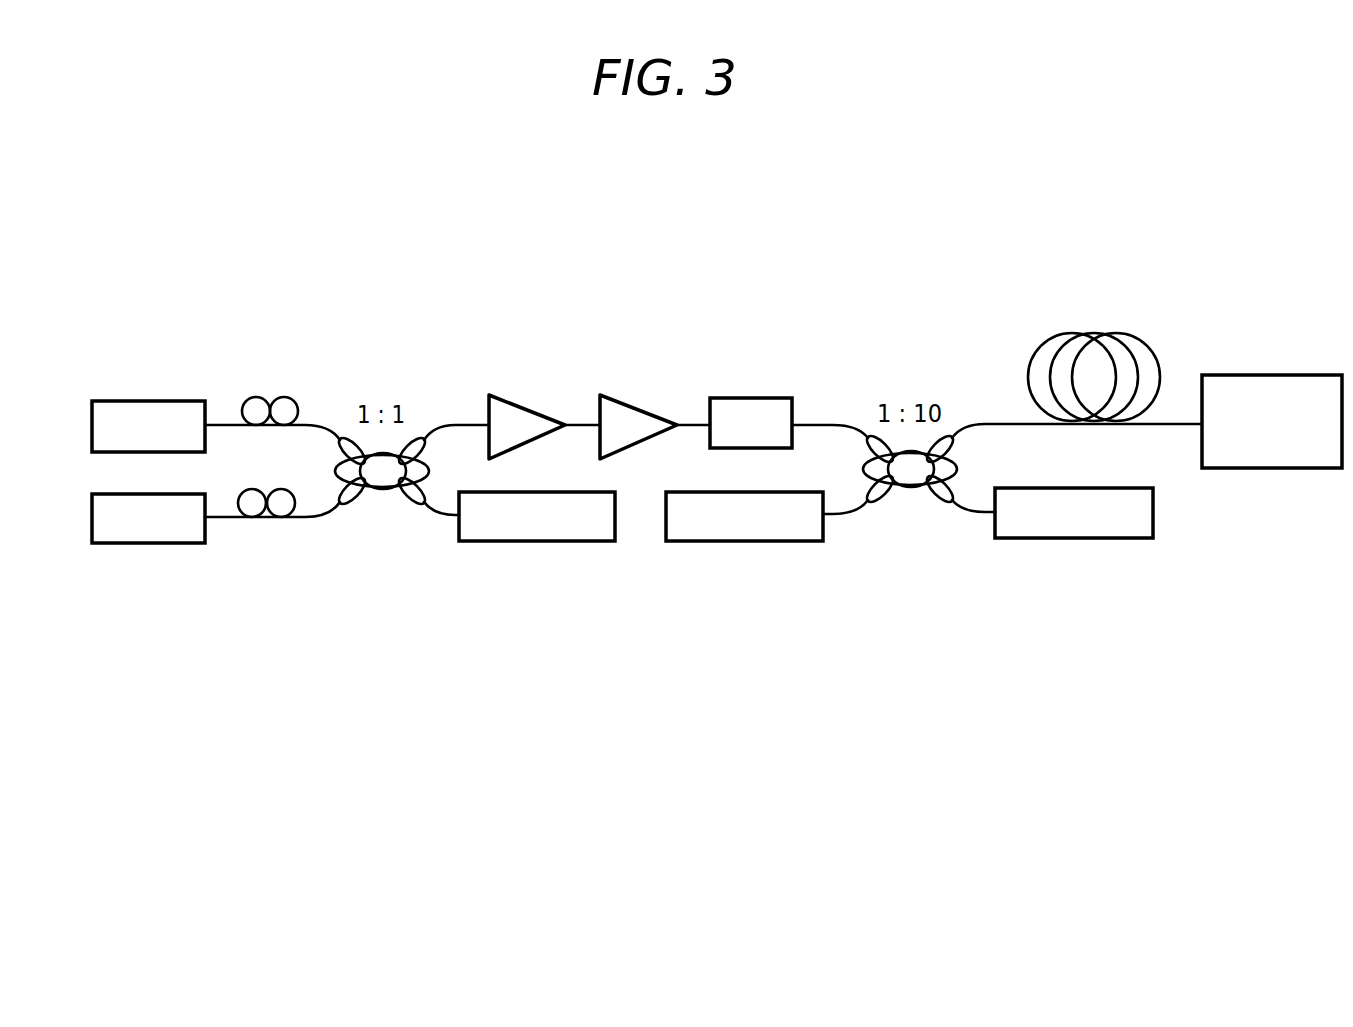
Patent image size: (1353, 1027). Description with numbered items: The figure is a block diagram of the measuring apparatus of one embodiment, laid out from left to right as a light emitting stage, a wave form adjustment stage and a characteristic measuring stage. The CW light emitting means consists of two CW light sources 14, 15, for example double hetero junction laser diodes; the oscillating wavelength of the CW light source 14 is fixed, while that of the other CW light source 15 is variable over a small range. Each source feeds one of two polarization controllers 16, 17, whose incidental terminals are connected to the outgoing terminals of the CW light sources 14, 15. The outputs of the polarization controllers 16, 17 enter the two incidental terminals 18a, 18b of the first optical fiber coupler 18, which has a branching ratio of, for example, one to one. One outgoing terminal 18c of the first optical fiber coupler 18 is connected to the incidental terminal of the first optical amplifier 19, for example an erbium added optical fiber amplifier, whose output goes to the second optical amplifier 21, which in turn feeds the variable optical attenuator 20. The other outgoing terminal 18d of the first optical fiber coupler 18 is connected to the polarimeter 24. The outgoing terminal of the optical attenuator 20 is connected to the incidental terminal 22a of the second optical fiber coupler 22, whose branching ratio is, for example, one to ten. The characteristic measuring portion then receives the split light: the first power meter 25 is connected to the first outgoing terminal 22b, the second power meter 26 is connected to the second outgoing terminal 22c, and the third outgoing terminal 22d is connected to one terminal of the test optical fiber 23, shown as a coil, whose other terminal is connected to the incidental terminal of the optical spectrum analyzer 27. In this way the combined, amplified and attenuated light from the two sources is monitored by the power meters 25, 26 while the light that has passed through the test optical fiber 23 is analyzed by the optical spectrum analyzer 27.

The CW light source 14 is at (143, 401).
The CW light source 15 is at (138, 543).
The polarization controller 16 is at (251, 398).
The polarization controller 17 is at (247, 519).
The first optical fiber coupler 18 is at (384, 497).
The incidental terminal 18a is at (342, 438).
The incidental terminal 18b is at (341, 500).
The outgoing terminal 18c is at (426, 438).
The outgoing terminal 18d is at (424, 500).
The first optical amplifier 19 is at (526, 405).
The variable optical attenuator 20 is at (735, 398).
The second optical amplifier 21 is at (647, 416).
The second optical fiber coupler 22 is at (914, 495).
The incidental terminal 22a is at (865, 437).
The first outgoing terminal 22b is at (890, 492).
The second outgoing terminal 22c is at (934, 490).
The third outgoing terminal 22d is at (958, 437).
The test optical fiber 23 is at (1150, 346).
The polarimeter 24 is at (580, 541).
The first power meter 25 is at (720, 541).
The second power meter 26 is at (1115, 538).
The optical spectrum analyzer 27 is at (1288, 468).